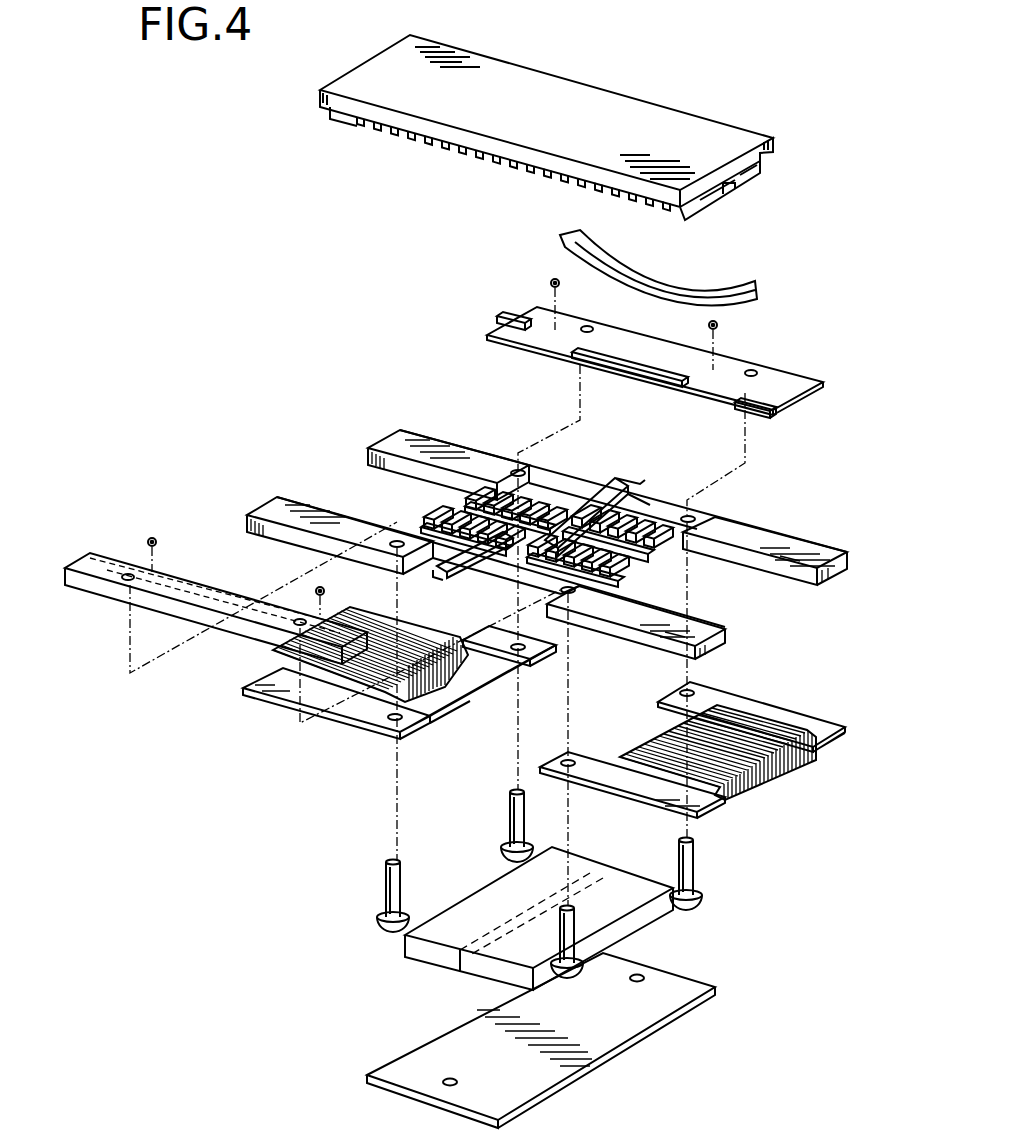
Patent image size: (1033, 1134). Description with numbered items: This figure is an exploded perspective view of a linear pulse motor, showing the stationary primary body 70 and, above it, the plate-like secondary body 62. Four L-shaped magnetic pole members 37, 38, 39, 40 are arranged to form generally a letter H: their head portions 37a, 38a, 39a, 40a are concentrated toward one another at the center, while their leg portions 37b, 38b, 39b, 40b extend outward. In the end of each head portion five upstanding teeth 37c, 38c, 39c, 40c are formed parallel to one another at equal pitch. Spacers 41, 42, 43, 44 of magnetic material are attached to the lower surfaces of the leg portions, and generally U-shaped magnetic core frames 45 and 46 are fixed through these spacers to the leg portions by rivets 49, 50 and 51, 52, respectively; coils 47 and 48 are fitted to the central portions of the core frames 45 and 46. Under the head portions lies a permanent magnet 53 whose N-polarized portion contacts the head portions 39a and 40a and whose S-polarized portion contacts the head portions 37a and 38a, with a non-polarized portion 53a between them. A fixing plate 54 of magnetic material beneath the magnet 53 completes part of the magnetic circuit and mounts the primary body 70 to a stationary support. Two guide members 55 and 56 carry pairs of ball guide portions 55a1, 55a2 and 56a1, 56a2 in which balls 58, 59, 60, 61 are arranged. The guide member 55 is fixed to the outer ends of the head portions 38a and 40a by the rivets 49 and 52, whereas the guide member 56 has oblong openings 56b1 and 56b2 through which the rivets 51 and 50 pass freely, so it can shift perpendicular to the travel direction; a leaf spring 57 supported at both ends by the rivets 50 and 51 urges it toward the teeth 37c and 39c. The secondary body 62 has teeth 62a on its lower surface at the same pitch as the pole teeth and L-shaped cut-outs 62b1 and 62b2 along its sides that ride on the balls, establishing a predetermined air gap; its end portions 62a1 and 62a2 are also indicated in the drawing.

The primary body 70 is at (305, 330).
The secondary body 62 is at (613, 113).
The teeth of the secondary body 62a is at (478, 161).
The cover end portion 62a1 is at (737, 202).
The cover end portion 62a2 is at (743, 183).
The cut-out 62b1 is at (688, 213).
The cut-out 62b2 is at (790, 163).
The leaf spring 57 is at (580, 255).
The guide member 56 is at (652, 360).
The ball guide portion 56a1 is at (568, 350).
The ball guide portion 56a2 is at (727, 390).
The oblong opening 56b1 is at (587, 327).
The oblong opening 56b2 is at (753, 372).
The ball 60 is at (550, 283).
The ball 58 is at (718, 325).
The magnetic pole member 39 is at (503, 465).
The head portion 39a is at (563, 492).
The leg portion 39b is at (412, 442).
The teeth 39c is at (535, 482).
The spacer 43 is at (370, 450).
The magnetic pole member 37 is at (703, 517).
The head portion 37a is at (627, 507).
The leg portion 37b is at (783, 543).
The teeth 37c is at (633, 517).
The spacer 41 is at (767, 567).
The magnetic pole member 40 is at (440, 552).
The head portion 40a is at (423, 537).
The leg portion 40b is at (287, 517).
The teeth 40c is at (443, 508).
The spacer 44 is at (247, 523).
The magnetic pole member 38 is at (603, 602).
The head portion 38a is at (580, 580).
The leg portion 38b is at (690, 620).
The teeth 38c is at (625, 565).
The spacer 42 is at (725, 643).
The guide member 55 is at (110, 590).
The ball guide portion 55a1 is at (163, 583).
The ball guide portion 55a2 is at (265, 635).
The ball 61 is at (152, 538).
The ball 59 is at (325, 590).
The magnetic core frame 46 is at (273, 687).
The coil 48 is at (417, 673).
The magnetic core frame 45 is at (753, 707).
The coil 47 is at (750, 787).
The rivet 51 is at (513, 813).
The rivet 50 is at (695, 870).
The rivet 52 is at (388, 882).
The rivet 49 is at (570, 943).
The permanent magnet 53 is at (427, 950).
The non-polarized portion 53a is at (460, 978).
The fixing plate 54 is at (597, 1030).